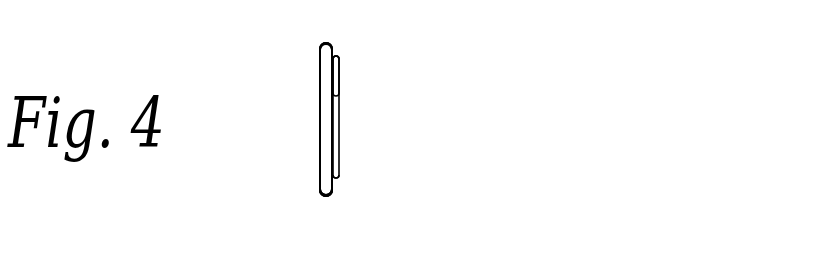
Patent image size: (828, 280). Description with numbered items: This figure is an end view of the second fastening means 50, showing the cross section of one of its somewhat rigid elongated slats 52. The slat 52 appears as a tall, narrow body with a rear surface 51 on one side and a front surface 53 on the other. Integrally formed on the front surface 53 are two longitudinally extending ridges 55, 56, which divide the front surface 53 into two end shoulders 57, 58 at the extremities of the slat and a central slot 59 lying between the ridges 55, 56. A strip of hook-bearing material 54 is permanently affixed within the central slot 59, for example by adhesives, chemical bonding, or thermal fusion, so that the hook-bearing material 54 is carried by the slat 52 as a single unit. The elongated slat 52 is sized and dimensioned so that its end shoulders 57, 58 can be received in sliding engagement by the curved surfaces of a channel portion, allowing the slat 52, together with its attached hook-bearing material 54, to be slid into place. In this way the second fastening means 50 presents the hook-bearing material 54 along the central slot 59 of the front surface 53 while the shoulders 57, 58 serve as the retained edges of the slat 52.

The second fastening means 50 is at (272, 119).
The rear surface 51 is at (285, 119).
The elongated slat 52 is at (293, 105).
The front surface 53 is at (374, 166).
The strip of hook-bearing material 54 is at (374, 117).
The longitudinally extending ridge 55 is at (374, 55).
The longitudinally extending ridge 56 is at (368, 186).
The end shoulder 57 is at (368, 25).
The end shoulder 58 is at (368, 216).
The central slot 59 is at (374, 76).